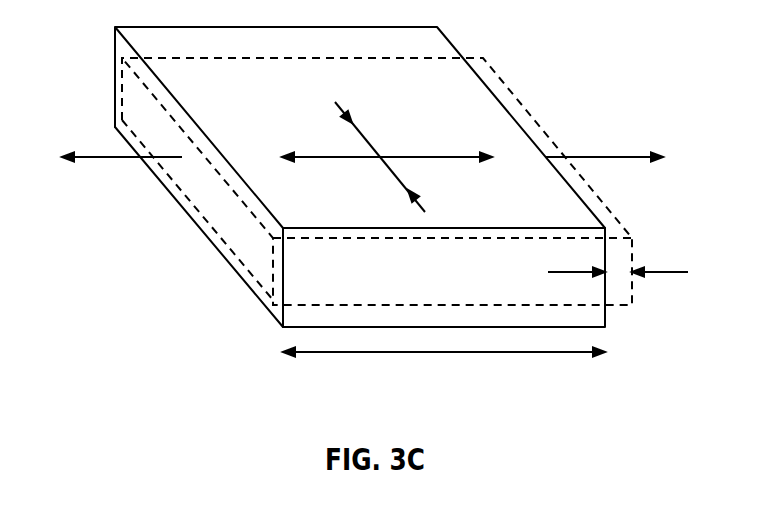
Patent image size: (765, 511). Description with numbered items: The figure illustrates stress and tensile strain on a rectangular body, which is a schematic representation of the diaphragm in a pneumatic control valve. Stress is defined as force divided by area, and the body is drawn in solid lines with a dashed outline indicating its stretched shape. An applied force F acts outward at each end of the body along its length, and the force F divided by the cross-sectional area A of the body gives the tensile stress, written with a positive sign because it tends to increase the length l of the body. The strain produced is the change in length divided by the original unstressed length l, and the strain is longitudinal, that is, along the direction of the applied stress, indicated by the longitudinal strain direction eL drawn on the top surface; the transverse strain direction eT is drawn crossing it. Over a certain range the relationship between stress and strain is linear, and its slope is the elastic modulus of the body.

The applied force F is at (90, 158).
The longitudinal strain eL is at (442, 155).
The transverse strain eT is at (413, 192).
The area A is at (246, 250).
The original unstressed length l is at (447, 352).